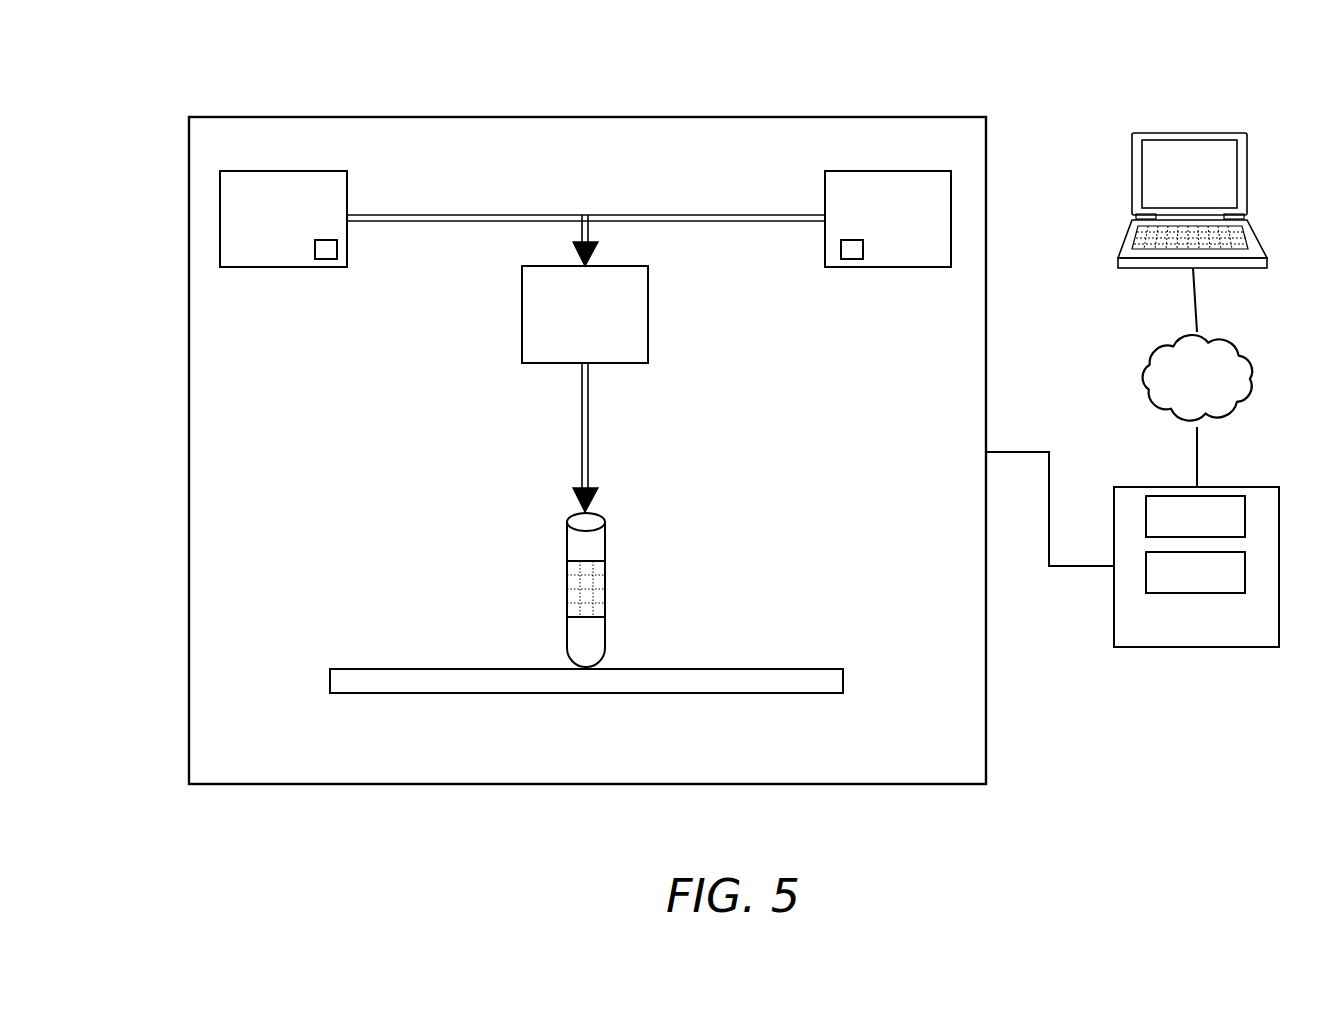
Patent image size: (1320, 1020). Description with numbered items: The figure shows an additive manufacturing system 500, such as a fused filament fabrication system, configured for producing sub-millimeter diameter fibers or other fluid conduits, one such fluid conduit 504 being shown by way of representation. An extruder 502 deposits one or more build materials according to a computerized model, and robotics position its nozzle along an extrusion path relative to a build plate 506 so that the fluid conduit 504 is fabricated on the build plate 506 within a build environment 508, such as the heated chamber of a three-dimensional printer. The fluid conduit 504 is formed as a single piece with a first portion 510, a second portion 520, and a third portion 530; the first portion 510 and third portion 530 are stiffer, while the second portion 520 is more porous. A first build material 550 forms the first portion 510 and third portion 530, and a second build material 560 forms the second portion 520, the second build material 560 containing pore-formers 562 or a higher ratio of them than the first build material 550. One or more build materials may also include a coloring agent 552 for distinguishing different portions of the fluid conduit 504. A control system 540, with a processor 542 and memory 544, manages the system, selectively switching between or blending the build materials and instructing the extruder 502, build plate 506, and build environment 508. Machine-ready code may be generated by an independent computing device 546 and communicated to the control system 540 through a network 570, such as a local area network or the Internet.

The additive manufacturing system 500 is at (182, 76).
The extruder 502 is at (564, 327).
The fluid conduit 504 is at (569, 586).
The build plate 506 is at (378, 695).
The build environment 508 is at (987, 743).
The first portion 510 is at (607, 638).
The second portion 520 is at (607, 592).
The third portion 530 is at (607, 547).
The control system 540 is at (1174, 636).
The processor 542 is at (1174, 531).
The memory 544 is at (1174, 586).
The independent computing device 546 is at (1162, 132).
The first build material 550 is at (262, 232).
The coloring agent 552 is at (327, 250).
The second build material 560 is at (867, 232).
The pore-formers 562 is at (851, 250).
The network 570 is at (1175, 390).